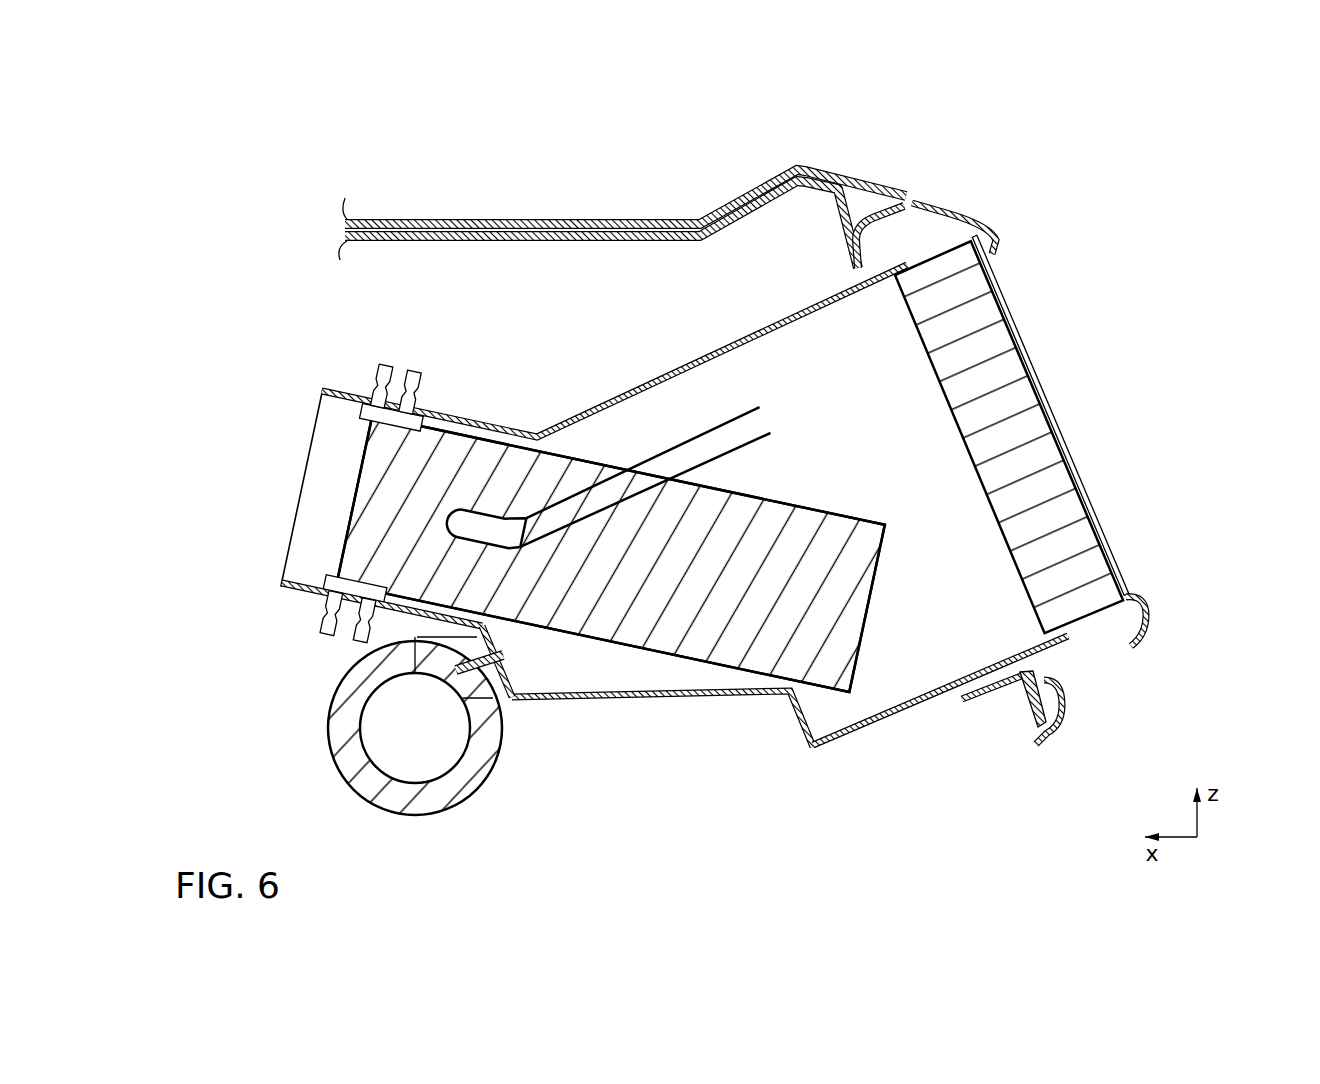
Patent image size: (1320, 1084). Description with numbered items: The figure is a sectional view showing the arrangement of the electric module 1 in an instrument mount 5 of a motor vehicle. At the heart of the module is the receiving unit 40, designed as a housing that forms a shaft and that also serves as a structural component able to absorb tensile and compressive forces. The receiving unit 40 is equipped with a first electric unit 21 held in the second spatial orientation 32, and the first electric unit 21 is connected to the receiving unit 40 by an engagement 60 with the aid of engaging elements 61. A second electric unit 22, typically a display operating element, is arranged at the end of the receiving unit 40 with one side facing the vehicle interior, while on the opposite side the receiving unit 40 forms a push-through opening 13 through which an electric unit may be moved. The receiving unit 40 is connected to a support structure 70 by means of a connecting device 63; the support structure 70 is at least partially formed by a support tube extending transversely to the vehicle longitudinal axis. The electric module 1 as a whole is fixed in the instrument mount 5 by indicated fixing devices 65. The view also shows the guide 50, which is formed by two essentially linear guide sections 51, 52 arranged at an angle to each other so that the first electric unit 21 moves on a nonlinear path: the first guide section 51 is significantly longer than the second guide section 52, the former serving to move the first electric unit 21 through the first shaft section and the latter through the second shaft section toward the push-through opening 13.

The electric module 1 is at (1168, 240).
The instrument mount 5 is at (762, 170).
The push-through opening 13 is at (307, 475).
The first electric unit 21 is at (752, 637).
The second spatial orientation 32 is at (611, 610).
The second electric unit 22 is at (1050, 515).
The receiving unit 40 is at (918, 673).
The guide 50 is at (660, 450).
The first guide section 51 is at (702, 448).
The second guide section 52 is at (472, 525).
The engagement 60 is at (365, 378).
The engaging elements 61 is at (415, 397).
The connecting device 63 is at (507, 713).
The fixing devices 65 is at (948, 212).
The support structure 70 is at (472, 763).